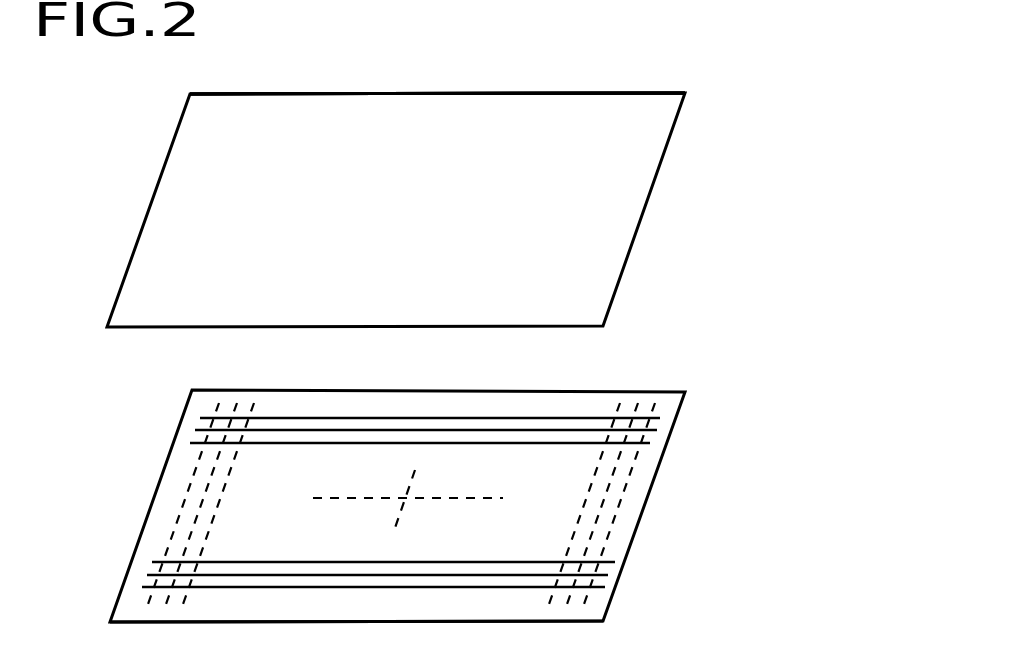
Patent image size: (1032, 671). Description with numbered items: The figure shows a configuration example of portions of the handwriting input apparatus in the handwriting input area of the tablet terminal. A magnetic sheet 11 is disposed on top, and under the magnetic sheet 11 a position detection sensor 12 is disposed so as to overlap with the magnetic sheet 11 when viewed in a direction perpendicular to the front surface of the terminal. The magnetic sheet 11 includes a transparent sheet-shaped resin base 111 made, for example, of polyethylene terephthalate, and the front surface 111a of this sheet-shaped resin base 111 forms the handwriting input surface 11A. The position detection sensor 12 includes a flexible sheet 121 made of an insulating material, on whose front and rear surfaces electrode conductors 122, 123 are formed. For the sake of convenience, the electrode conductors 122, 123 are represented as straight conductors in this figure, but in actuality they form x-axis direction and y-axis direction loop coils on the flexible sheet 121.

The magnetic sheet 11 is at (612, 204).
The sheet-shaped resin base 111 is at (361, 107).
The front surface 111a is at (541, 107).
The handwriting input surface 11A is at (437, 93).
The position detection sensor 12 is at (663, 467).
The flexible sheet 121 is at (593, 608).
The electrode conductors 122 is at (411, 417).
The electrode conductors 123 is at (178, 510).